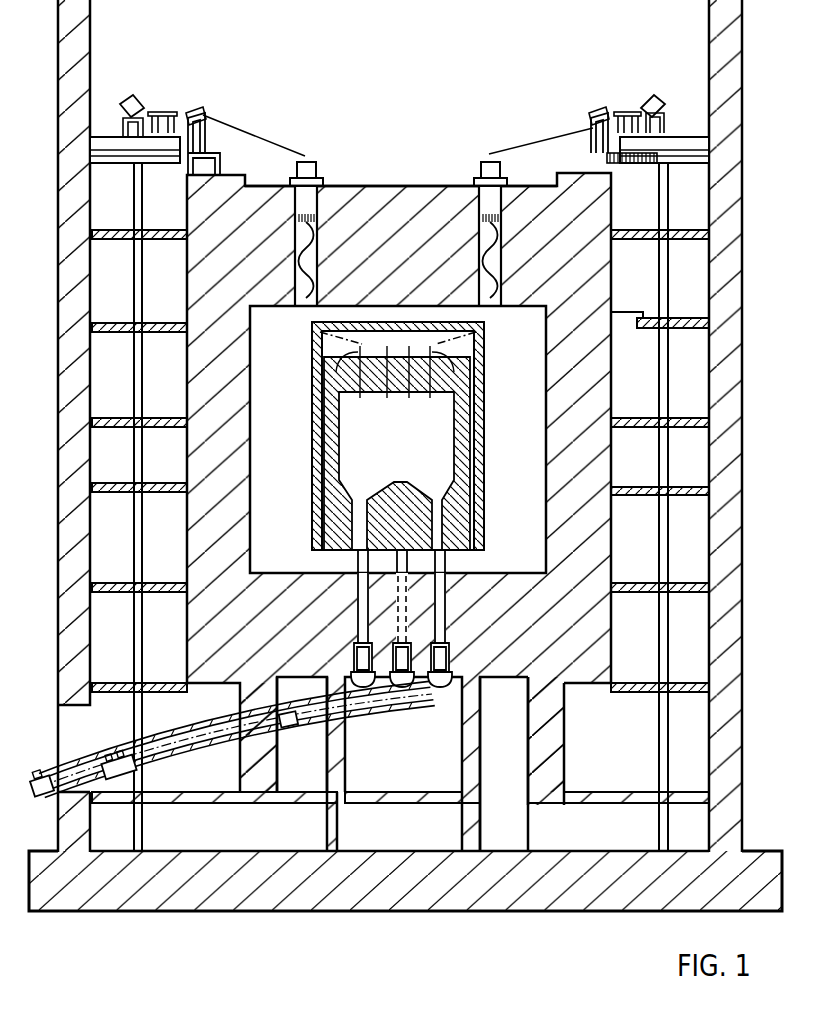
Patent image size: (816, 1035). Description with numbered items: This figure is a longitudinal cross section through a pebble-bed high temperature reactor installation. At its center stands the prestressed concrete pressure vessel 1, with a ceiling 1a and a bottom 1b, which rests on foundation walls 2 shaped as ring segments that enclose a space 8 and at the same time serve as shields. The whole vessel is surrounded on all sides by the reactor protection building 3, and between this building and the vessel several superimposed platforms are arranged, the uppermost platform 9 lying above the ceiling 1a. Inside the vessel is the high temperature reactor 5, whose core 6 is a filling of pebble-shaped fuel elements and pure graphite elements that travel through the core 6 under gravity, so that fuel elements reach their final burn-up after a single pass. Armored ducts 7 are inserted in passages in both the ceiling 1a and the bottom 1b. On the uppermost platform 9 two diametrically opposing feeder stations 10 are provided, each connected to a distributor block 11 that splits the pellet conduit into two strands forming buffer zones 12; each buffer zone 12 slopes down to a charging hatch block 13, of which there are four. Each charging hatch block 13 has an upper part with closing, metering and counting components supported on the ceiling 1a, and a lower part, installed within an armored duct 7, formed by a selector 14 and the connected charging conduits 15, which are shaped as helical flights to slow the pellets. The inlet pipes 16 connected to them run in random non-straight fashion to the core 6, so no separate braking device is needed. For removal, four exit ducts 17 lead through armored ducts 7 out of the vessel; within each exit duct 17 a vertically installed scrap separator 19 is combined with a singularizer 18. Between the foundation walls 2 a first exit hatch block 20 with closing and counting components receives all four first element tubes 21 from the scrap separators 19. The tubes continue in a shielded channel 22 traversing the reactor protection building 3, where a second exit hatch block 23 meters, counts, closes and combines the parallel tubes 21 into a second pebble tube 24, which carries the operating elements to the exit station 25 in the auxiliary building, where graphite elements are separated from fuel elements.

The prestressed concrete pressure vessel 1 is at (426, 438).
The ceiling 1a is at (423, 186).
The bottom 1b is at (540, 830).
The foundation walls 2 is at (405, 830).
The reactor protection building 3 is at (722, 452).
The high temperature reactor 5 is at (398, 438).
The core 6 is at (405, 447).
The armored ducts 7 is at (383, 315).
The space 8 is at (313, 785).
The uppermost platform 9 is at (686, 160).
The feeder stations 10 is at (131, 96).
The distributor block 11 is at (194, 112).
The buffer zones 12 is at (243, 128).
The charging hatch blocks 13 is at (313, 172).
The selector 14 is at (305, 200).
The charging conduits 15 is at (302, 303).
The inlet pipes 16 is at (323, 370).
The exit ducts 17 is at (432, 741).
The singularizer 18 is at (403, 688).
The scrap separator 19 is at (403, 688).
The first exit hatch block 20 is at (313, 783).
The first element tubes 21 is at (215, 735).
The shielded channel 22 is at (212, 780).
The second exit hatch block 23 is at (117, 782).
The second pebble tube 24 is at (85, 785).
The exit station 25 is at (231, 828).